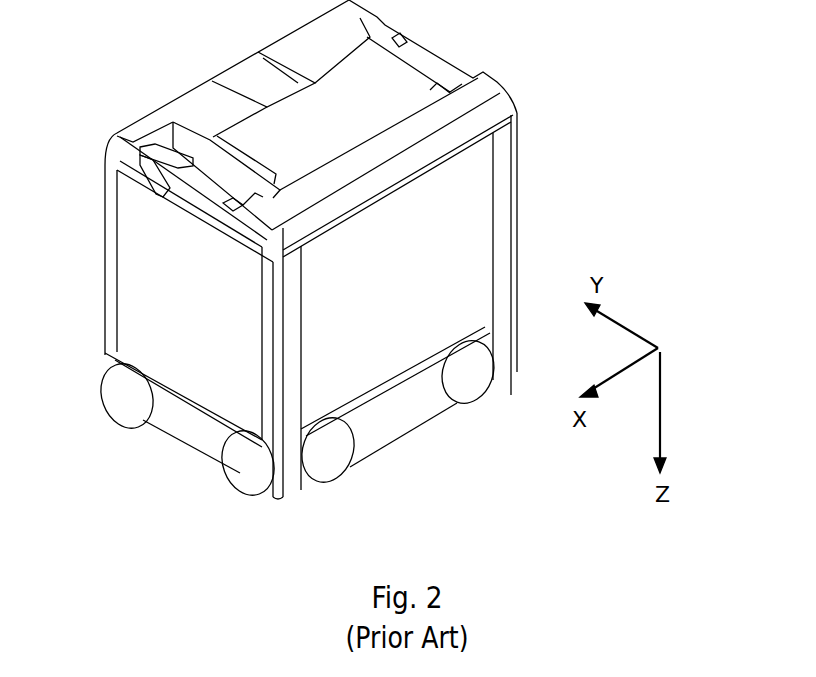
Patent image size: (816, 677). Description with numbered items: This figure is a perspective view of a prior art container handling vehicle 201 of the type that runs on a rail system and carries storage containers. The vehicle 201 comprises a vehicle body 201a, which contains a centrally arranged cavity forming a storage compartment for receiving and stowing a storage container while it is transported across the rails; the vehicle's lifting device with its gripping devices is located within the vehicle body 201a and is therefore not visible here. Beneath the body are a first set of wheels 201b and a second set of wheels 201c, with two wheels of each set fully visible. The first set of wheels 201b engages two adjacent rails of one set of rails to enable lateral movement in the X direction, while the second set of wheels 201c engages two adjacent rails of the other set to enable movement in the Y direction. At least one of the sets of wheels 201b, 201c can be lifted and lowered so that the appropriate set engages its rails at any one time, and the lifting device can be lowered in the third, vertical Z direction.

The container handling vehicle 201 is at (568, 218).
The vehicle body 201a is at (207, 107).
The first set of wheels 201b is at (447, 438).
The second set of wheels 201c is at (150, 460).